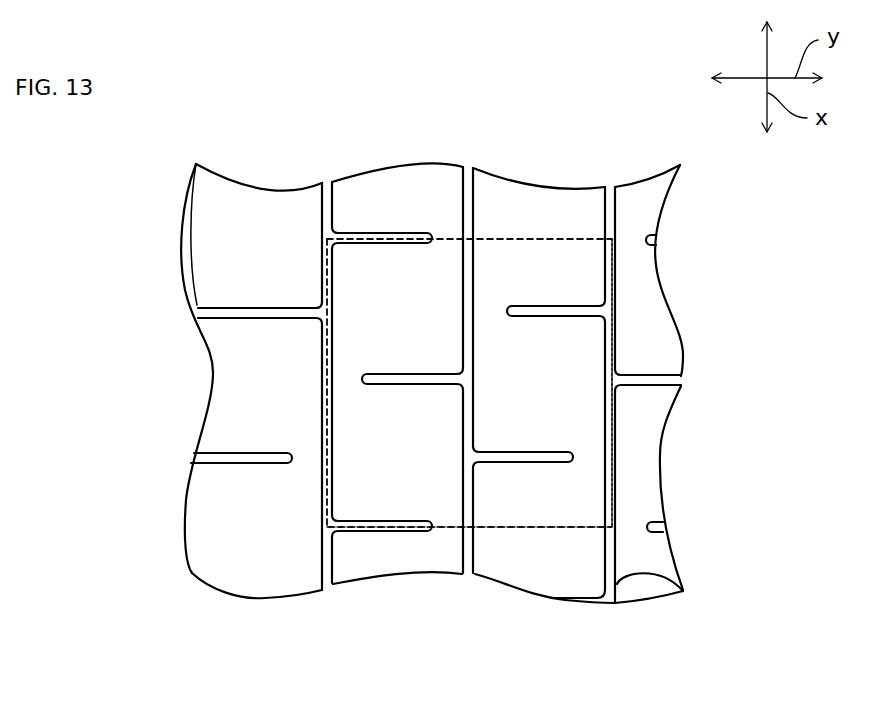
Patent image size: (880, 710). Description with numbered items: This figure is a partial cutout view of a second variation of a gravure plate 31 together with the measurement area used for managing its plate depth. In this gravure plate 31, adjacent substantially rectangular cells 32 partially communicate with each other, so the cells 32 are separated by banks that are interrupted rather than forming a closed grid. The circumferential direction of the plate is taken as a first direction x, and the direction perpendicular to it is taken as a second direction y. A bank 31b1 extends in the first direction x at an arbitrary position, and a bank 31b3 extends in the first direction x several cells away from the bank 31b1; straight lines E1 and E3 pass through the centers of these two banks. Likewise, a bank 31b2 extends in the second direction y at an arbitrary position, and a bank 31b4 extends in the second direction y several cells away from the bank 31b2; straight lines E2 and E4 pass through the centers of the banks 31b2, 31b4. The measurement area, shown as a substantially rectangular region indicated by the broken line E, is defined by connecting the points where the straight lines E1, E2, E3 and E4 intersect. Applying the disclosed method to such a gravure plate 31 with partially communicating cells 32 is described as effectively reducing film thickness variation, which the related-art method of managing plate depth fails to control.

The gravure plate 31 is at (584, 132).
The bank 31b1 is at (655, 578).
The bank 31b2 is at (357, 523).
The bank 31b3 is at (322, 400).
The bank 31b4 is at (357, 231).
The cell 32 is at (573, 260).
The measurement area E is at (612, 354).
The straight line E1 is at (612, 450).
The straight line E2 is at (518, 530).
The straight line E3 is at (322, 298).
The straight line E4 is at (450, 240).